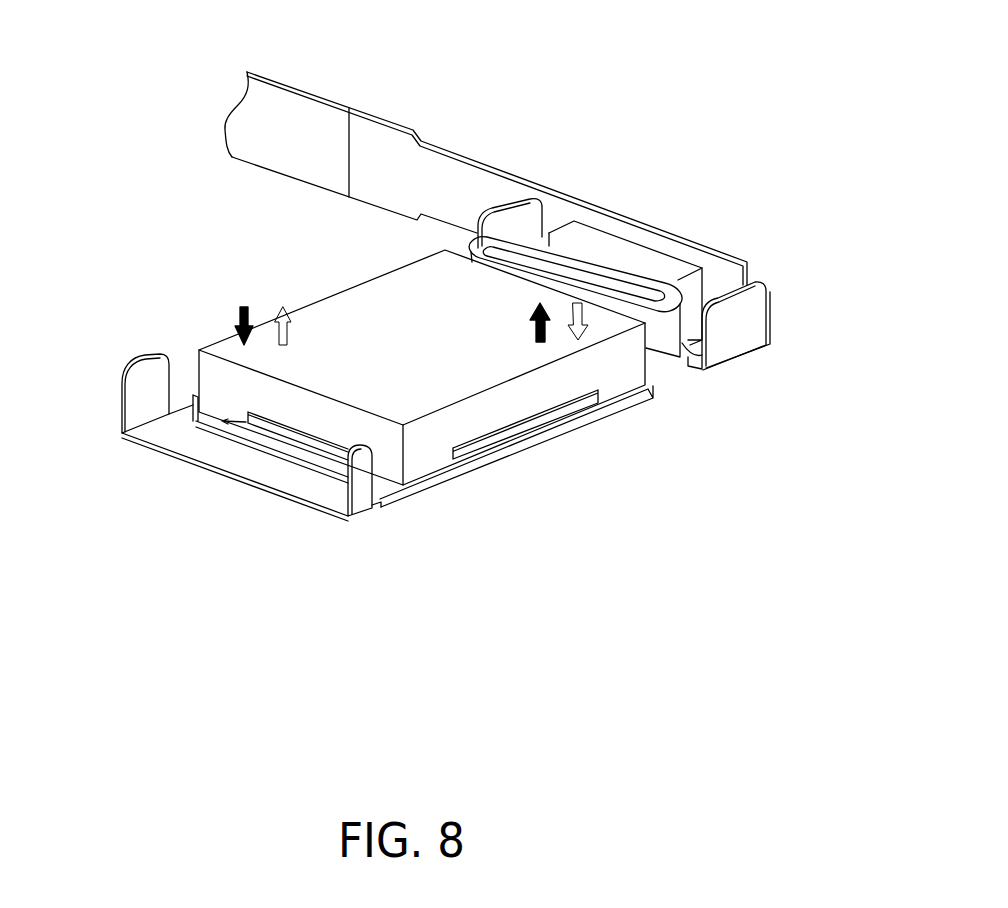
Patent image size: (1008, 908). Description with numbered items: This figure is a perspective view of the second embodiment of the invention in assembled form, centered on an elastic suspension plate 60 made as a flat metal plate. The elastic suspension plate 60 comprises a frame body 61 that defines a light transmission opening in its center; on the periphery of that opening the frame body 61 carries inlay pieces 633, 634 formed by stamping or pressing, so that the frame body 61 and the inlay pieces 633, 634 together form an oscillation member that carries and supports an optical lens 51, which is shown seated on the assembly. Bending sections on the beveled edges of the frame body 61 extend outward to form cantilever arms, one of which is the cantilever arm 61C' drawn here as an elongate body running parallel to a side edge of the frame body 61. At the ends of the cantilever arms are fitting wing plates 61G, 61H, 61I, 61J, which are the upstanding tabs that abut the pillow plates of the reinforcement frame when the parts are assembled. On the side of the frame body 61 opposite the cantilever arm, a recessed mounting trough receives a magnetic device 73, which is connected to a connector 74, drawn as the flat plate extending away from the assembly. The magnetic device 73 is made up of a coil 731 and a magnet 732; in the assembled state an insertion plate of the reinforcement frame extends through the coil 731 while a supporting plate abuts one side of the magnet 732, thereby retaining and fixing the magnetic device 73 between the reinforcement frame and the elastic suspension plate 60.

The optical lens 51 is at (320, 322).
The elastic suspension plate 60 is at (461, 386).
The frame body 61 is at (461, 364).
The cantilever arm 61C' is at (219, 458).
The fitting wing plate 61G is at (751, 320).
The fitting wing plate 61H is at (508, 213).
The fitting wing plate 61I is at (358, 471).
The fitting wing plate 61J is at (144, 362).
The inlay piece 633 is at (480, 447).
The inlay piece 634 is at (302, 442).
The magnetic device 73 is at (604, 223).
The coil 731 is at (575, 251).
The magnet 732 is at (653, 262).
The connector 74 is at (378, 136).